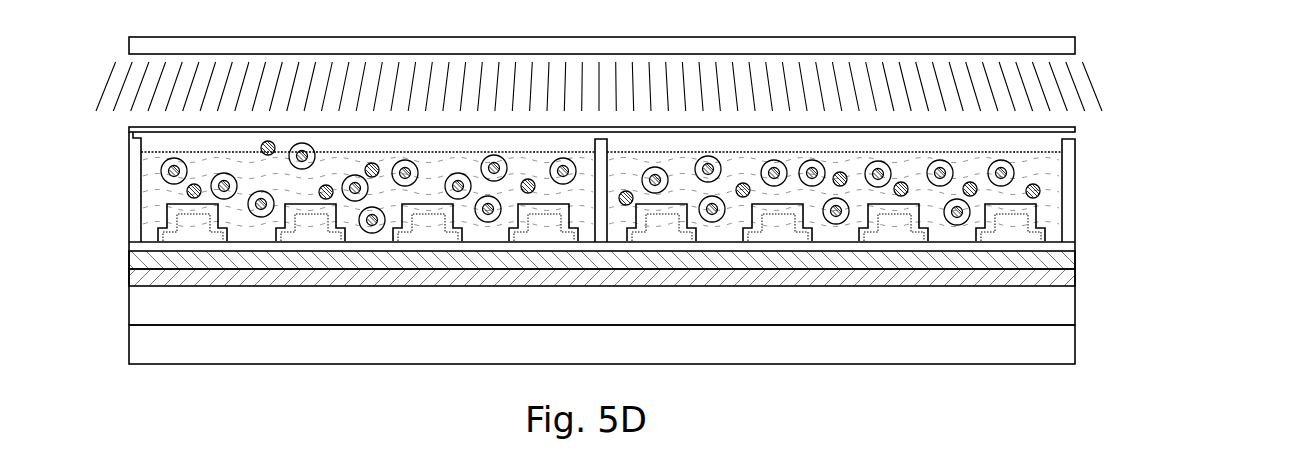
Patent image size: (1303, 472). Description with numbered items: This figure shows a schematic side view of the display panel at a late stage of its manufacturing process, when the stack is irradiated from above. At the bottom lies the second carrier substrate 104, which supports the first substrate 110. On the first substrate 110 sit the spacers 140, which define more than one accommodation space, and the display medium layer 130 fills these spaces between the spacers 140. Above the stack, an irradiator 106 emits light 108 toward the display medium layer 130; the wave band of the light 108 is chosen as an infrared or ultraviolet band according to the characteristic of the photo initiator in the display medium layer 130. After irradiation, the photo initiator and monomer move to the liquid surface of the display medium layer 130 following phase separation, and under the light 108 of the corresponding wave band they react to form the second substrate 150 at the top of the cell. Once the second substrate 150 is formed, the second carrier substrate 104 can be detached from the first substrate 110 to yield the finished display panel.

The second carrier substrate 104 is at (1066, 341).
The irradiator 106 is at (1064, 46).
The light 108 is at (1108, 84).
The first substrate 110 is at (1078, 242).
The display medium layer 130 is at (1074, 219).
The spacers 140 is at (1064, 162).
The second substrate 150 is at (1042, 139).